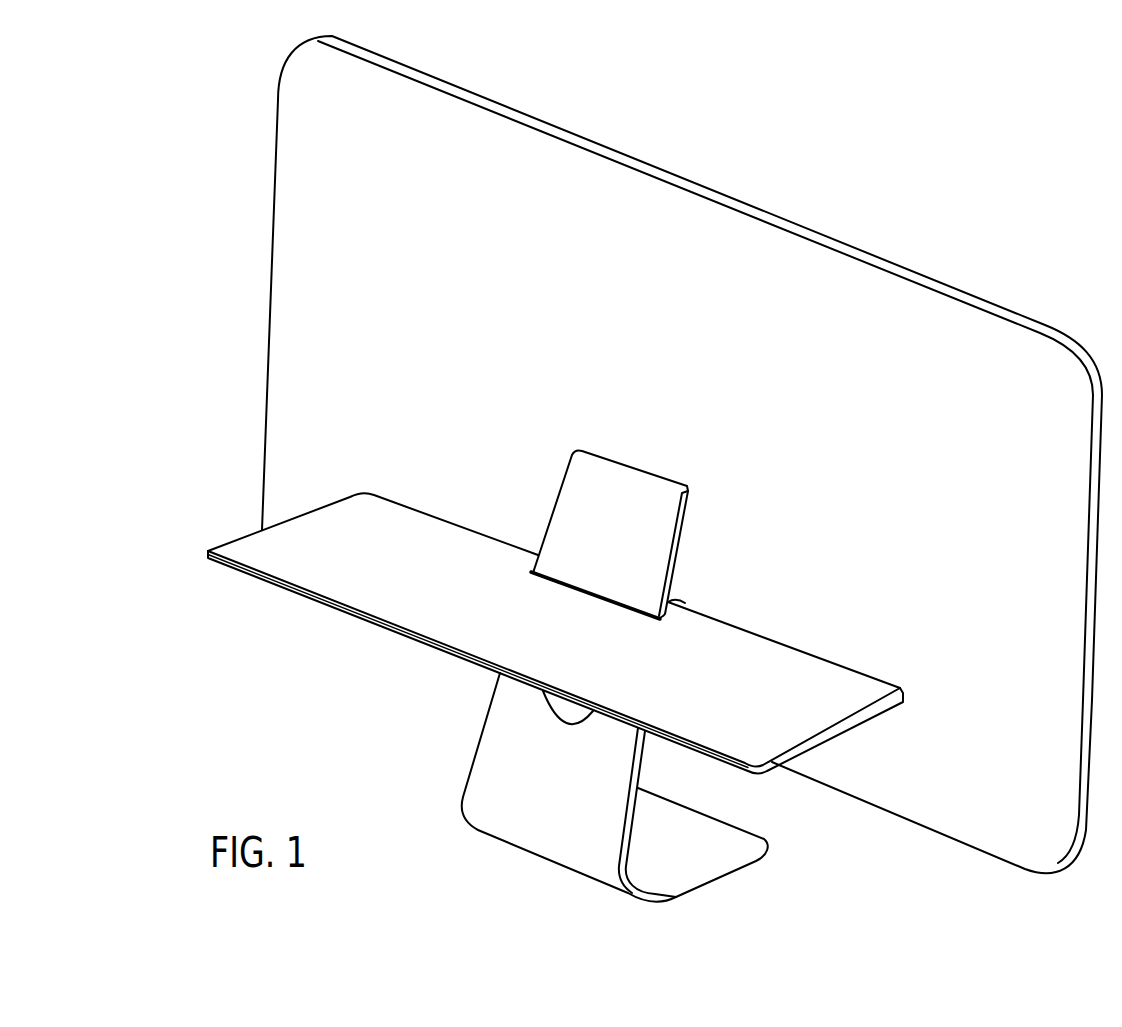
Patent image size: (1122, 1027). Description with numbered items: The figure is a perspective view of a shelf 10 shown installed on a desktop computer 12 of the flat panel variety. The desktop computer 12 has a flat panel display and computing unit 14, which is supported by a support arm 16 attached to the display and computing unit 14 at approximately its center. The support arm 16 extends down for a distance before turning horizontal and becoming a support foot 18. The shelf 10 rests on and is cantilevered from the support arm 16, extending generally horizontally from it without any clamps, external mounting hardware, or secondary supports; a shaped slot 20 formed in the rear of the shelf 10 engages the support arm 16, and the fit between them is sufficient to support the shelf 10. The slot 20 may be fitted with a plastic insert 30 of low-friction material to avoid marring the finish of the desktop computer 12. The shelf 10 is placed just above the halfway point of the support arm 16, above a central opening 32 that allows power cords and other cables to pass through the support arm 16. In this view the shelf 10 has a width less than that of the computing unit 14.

The shelf 10 is at (394, 497).
The desktop computer 12 is at (259, 376).
The flat panel display and computing unit 14 is at (287, 203).
The support arm 16 is at (657, 552).
The support foot 18 is at (727, 872).
The slot 20 is at (606, 615).
The plastic insert 30 is at (577, 592).
The central opening 32 is at (568, 708).